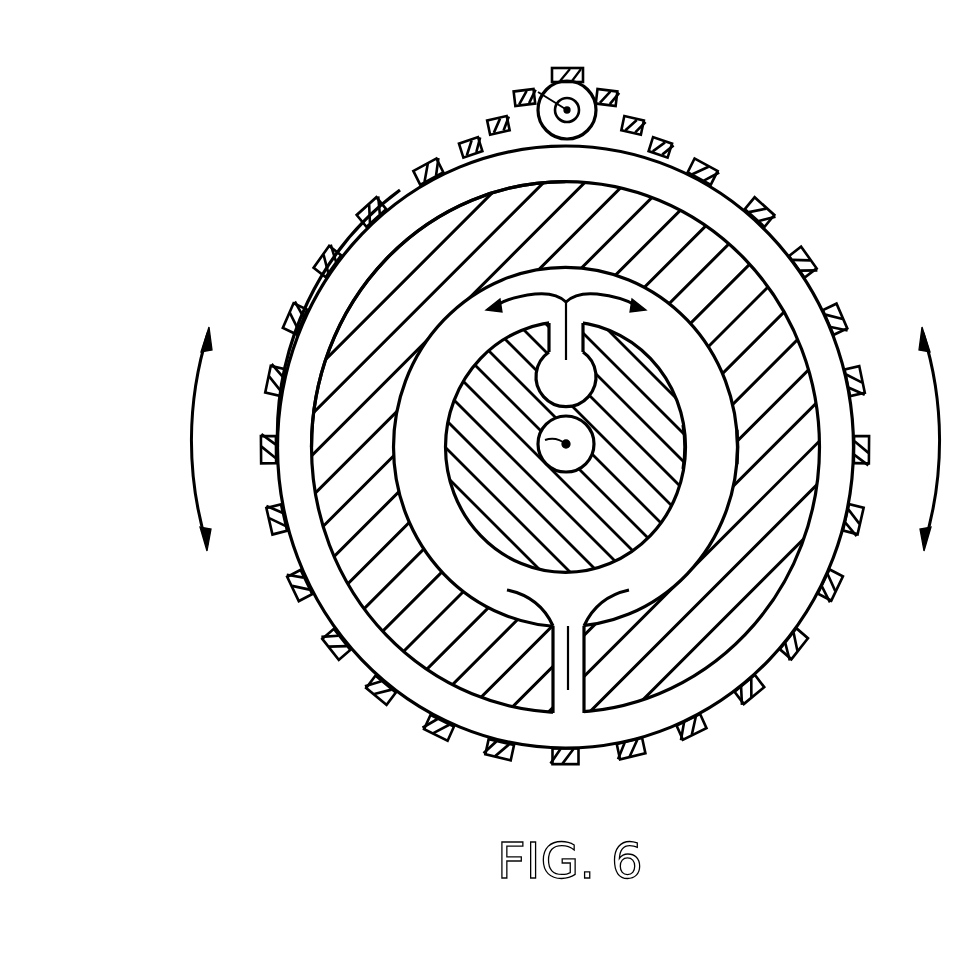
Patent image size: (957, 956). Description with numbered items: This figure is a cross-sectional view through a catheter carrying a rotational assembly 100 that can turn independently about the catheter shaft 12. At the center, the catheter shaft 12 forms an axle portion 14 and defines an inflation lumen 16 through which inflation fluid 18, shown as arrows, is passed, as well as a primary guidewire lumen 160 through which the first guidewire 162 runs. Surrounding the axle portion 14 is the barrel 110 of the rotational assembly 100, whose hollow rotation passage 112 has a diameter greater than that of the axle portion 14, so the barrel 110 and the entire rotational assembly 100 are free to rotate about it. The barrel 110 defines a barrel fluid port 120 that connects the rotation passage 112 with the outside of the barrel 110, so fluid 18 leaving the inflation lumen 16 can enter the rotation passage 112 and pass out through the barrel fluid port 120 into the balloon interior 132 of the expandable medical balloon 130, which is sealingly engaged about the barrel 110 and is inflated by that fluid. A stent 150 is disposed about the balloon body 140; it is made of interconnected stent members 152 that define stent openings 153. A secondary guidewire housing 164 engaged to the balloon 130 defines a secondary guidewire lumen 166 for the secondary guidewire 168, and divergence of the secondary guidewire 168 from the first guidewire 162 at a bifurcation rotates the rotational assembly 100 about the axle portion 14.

The rotational assembly 100 is at (332, 711).
The barrel 110 is at (650, 690).
The rotation passage 112 is at (458, 553).
The barrel fluid port 120 is at (553, 653).
The expandable medical balloon 130 is at (398, 190).
The balloon interior 132 is at (345, 236).
The balloon body 140 is at (823, 295).
The stent 150 is at (755, 700).
The stent member 152 is at (768, 213).
The stent opening 153 is at (733, 192).
The primary guidewire lumen 160 is at (566, 474).
The first guidewire 162 is at (541, 436).
The secondary guidewire housing 164 is at (590, 85).
The secondary guidewire lumen 166 is at (509, 96).
The secondary guidewire 168 is at (548, 97).
The catheter shaft 12 is at (684, 488).
The axle portion 14 is at (683, 440).
The inflation lumen 16 is at (596, 383).
The inflation fluid 18 is at (540, 300).